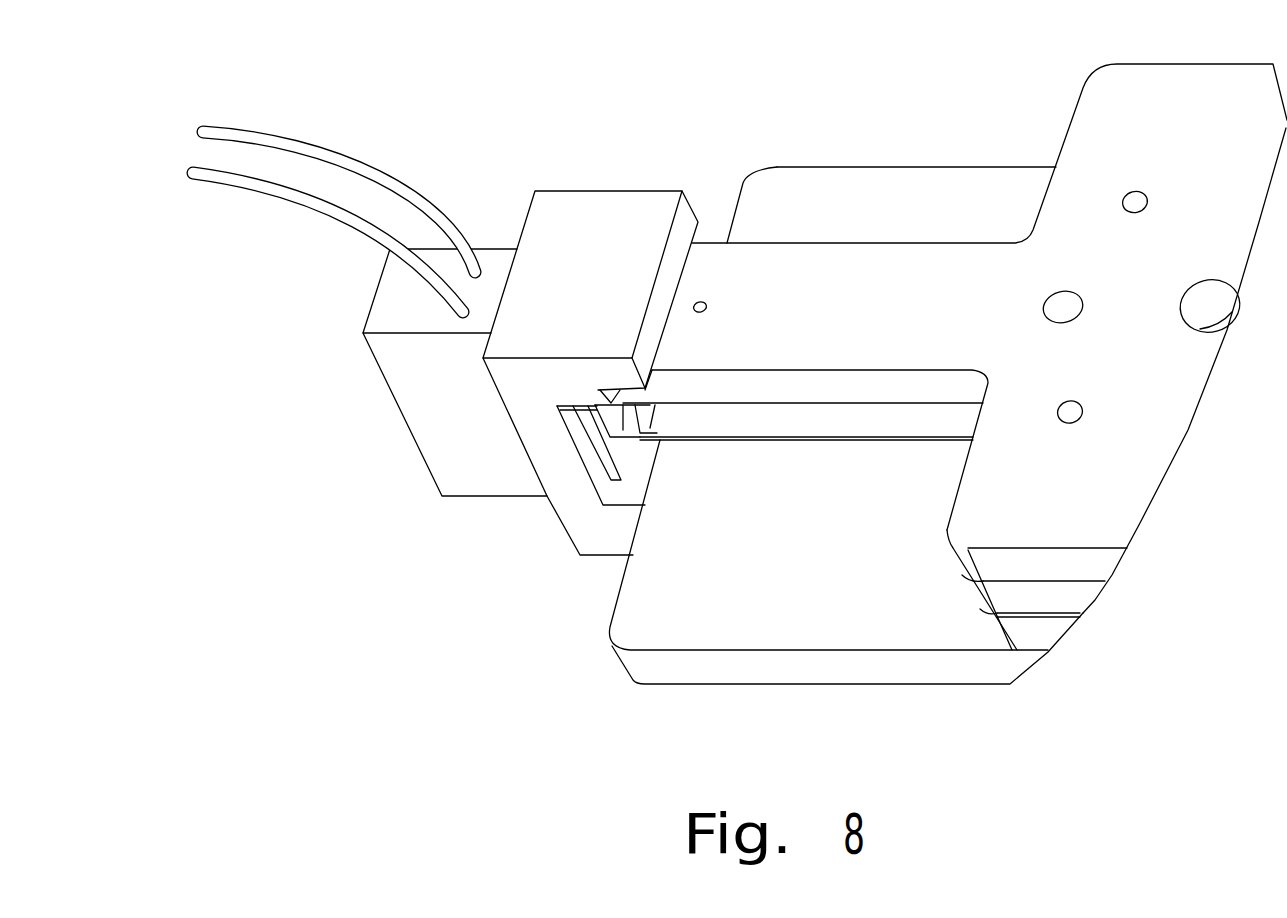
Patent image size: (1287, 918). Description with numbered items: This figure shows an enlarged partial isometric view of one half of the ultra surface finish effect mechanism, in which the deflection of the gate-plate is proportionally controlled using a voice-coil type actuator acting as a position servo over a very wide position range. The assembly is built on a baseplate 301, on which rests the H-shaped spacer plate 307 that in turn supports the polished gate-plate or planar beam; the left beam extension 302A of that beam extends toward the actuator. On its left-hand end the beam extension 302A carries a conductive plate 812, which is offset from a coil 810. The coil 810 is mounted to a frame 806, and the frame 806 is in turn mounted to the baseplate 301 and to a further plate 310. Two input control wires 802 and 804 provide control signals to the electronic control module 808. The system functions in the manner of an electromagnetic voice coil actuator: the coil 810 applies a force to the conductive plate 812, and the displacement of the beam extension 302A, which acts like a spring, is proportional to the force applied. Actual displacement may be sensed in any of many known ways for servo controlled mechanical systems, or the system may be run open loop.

The baseplate 301 is at (718, 593).
The left beam extension 302A is at (815, 422).
The H-shaped spacer plate 307 is at (1023, 628).
The plate 310 is at (1058, 510).
The input control wire 802 is at (385, 175).
The input control wire 804 is at (372, 218).
The frame 806 is at (620, 237).
The electronic control module 808 is at (465, 435).
The coil 810 is at (597, 450).
The conductive plate 812 is at (625, 442).